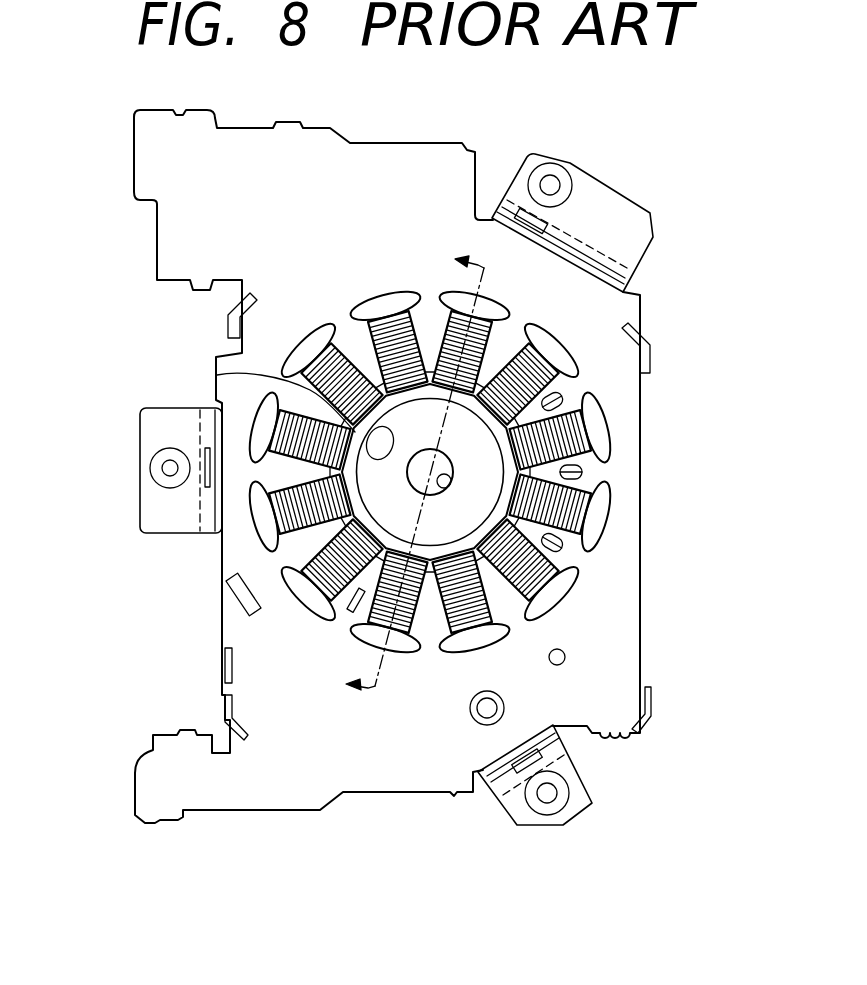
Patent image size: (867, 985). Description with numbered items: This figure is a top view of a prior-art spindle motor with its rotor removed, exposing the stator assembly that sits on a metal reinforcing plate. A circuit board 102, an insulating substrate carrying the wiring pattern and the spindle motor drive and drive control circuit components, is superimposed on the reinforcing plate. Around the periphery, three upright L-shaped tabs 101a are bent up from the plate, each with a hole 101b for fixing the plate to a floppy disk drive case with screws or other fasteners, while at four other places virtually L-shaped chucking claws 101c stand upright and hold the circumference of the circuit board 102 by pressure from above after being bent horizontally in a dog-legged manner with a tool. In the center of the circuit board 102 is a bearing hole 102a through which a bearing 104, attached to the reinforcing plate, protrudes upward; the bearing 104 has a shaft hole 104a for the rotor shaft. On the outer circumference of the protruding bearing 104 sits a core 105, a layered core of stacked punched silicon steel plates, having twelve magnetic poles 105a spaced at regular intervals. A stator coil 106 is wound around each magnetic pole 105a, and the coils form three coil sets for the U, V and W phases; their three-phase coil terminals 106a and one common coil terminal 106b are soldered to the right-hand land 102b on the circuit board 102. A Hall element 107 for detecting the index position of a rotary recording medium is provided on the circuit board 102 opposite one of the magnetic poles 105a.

The tab 101a is at (618, 210).
The hole 101b is at (551, 164).
The chucking claw 101c is at (228, 323).
The circuit board 102 is at (400, 180).
The bearing hole 102a is at (217, 375).
The land 102b is at (592, 482).
The bearing 104 is at (468, 508).
The shaft hole 104a is at (565, 650).
The core 105 is at (432, 557).
The magnetic pole 105a is at (558, 332).
The stator coil 106 is at (393, 337).
The three-phase coil terminal 106a is at (565, 395).
The common coil terminal 106b is at (350, 607).
The Hall element 107 is at (237, 590).